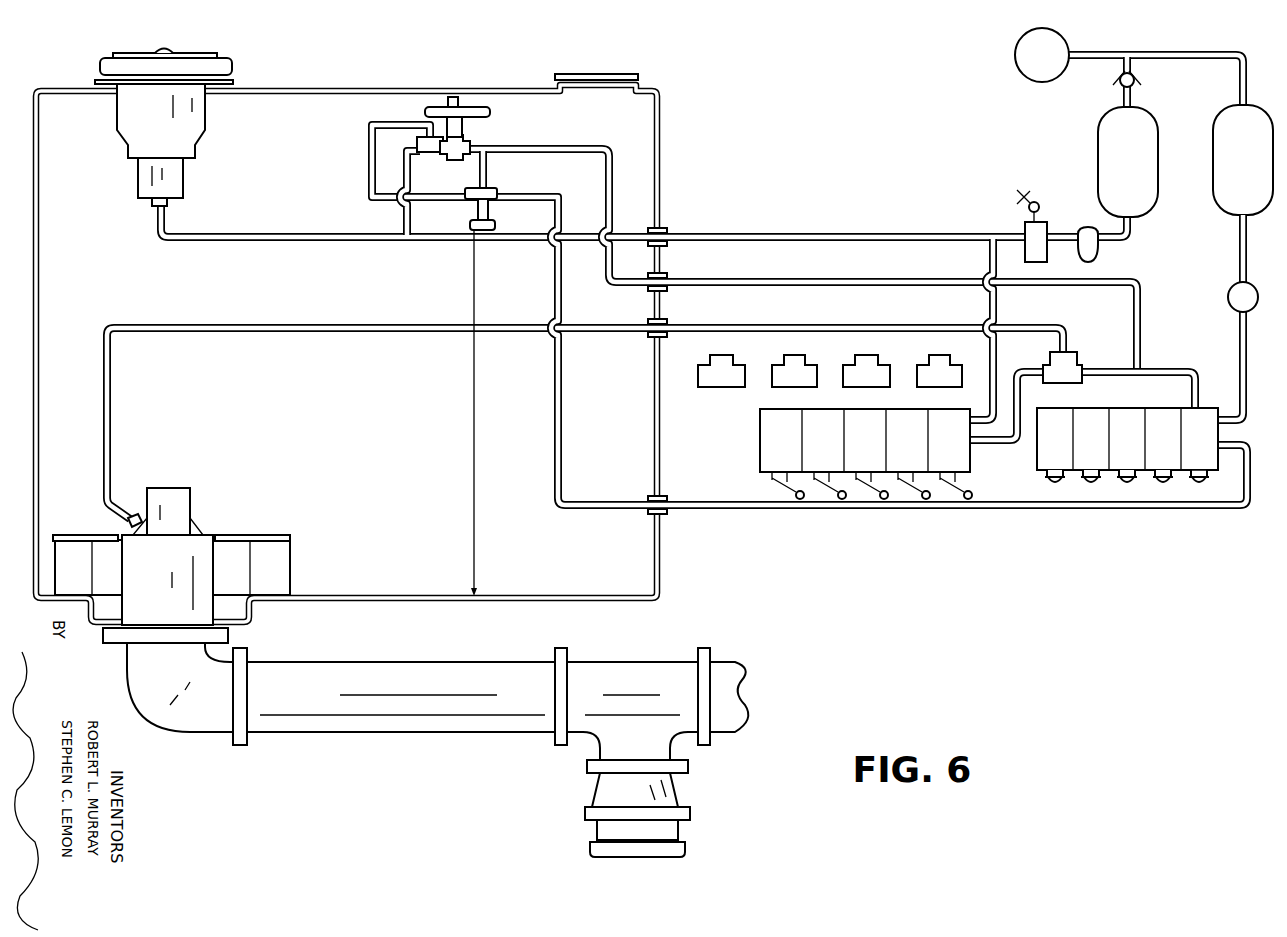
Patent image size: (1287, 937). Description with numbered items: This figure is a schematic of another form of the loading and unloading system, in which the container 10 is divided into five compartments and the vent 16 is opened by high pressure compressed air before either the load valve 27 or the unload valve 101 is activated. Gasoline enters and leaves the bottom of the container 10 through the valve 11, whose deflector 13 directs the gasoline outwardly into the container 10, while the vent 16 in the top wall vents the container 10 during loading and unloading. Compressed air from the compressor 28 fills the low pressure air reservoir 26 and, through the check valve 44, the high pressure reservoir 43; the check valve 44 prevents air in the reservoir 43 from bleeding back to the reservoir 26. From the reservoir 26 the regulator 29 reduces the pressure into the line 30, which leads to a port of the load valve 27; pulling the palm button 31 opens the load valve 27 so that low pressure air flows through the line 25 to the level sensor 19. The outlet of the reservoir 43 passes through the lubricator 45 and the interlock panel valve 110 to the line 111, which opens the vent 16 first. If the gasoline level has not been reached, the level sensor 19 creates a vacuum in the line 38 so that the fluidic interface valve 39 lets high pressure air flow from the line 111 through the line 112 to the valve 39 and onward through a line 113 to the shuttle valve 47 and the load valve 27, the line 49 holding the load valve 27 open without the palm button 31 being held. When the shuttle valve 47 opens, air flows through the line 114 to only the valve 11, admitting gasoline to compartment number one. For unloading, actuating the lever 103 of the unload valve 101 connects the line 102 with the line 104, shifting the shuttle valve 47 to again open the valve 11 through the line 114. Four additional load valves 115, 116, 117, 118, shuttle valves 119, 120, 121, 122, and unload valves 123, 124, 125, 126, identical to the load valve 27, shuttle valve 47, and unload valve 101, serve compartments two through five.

The container 10 is at (664, 199).
The valve 11 is at (218, 552).
The deflector 13 is at (275, 537).
The vent 16 is at (112, 134).
The level sensor 19 is at (500, 186).
The line 25 is at (1125, 472).
The air reservoir 26 is at (1218, 212).
The load valve 27 is at (1218, 476).
The compressor 28 is at (1016, 65).
The regulator 29 is at (1232, 305).
The line 30 is at (1250, 396).
The palm button 31 is at (1195, 488).
The line 38 is at (368, 165).
The fluidic interface valve 39 is at (438, 100).
The reservoir 43 is at (1099, 140).
The check valve 44 is at (1118, 86).
The lubricator 45 is at (1100, 250).
The shuttle valve 47 is at (1077, 350).
The line 49 is at (1150, 370).
The unload valve 101 is at (977, 472).
The line 102 is at (988, 305).
The lever 103 is at (965, 497).
The line 104 is at (988, 444).
The interlock panel valve 110 is at (1023, 250).
The line 111 is at (845, 236).
The line 112 is at (402, 211).
The conduit 113 is at (590, 144).
The line 114 is at (290, 334).
The load valve 115 is at (1170, 408).
The load valve 116 is at (1130, 408).
The load valve 117 is at (1093, 408).
The load valve 118 is at (1053, 408).
The shuttle valve 119 is at (922, 364).
The shuttle valve 120 is at (851, 364).
The shuttle valve 121 is at (778, 364).
The shuttle valve 122 is at (706, 364).
The unload valve 123 is at (912, 460).
The unload valve 124 is at (866, 464).
The unload valve 125 is at (826, 464).
The unload valve 126 is at (863, 483).